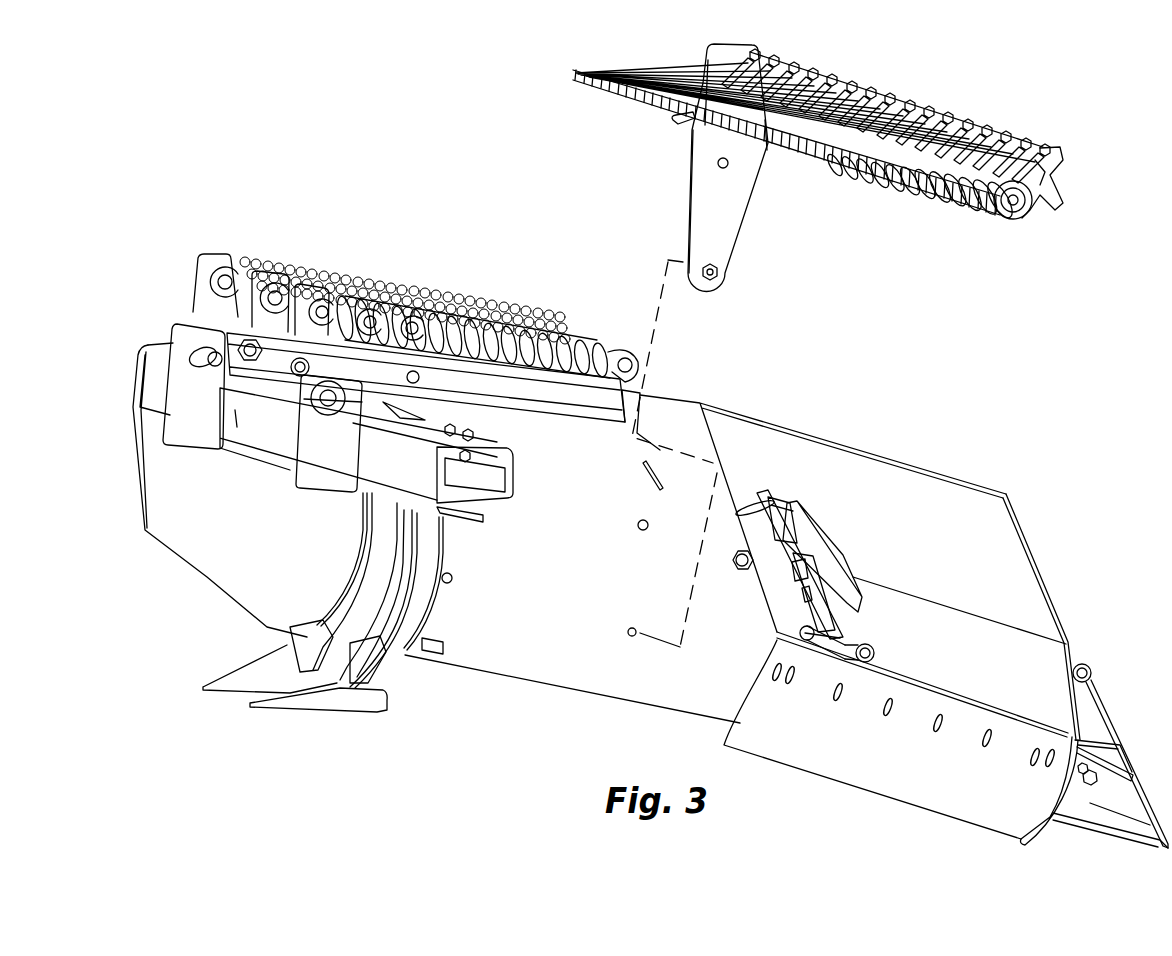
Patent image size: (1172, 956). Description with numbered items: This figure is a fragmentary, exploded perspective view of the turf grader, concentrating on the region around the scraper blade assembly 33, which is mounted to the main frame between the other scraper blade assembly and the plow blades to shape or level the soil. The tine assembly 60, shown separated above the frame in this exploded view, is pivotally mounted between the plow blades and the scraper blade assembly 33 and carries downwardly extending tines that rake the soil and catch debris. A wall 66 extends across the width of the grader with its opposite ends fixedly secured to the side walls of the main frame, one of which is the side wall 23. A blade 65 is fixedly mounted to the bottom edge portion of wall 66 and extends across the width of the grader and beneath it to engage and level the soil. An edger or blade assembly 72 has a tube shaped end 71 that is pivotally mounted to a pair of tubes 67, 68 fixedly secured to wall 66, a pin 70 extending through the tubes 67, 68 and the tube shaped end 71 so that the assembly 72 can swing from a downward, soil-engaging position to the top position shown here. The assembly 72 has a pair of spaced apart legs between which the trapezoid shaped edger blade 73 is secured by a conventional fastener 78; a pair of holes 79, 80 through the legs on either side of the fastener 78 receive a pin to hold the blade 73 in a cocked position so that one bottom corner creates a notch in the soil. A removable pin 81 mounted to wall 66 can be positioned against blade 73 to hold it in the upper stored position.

The tine assembly 60 is at (1052, 140).
The side wall 23 is at (667, 423).
The wall 66 is at (955, 497).
The edger or blade assembly 72 is at (793, 553).
The removable pin 81 is at (792, 522).
The edger blade 73 is at (850, 565).
The hole 80 is at (813, 572).
The fastener 78 is at (792, 577).
The hole 79 is at (803, 594).
The tube 67 is at (805, 633).
The tube 68 is at (863, 647).
The pin 70 is at (872, 651).
The tube shaped end 71 is at (830, 647).
The blade 65 is at (960, 773).
The scraper blade assembly 33 is at (1005, 787).